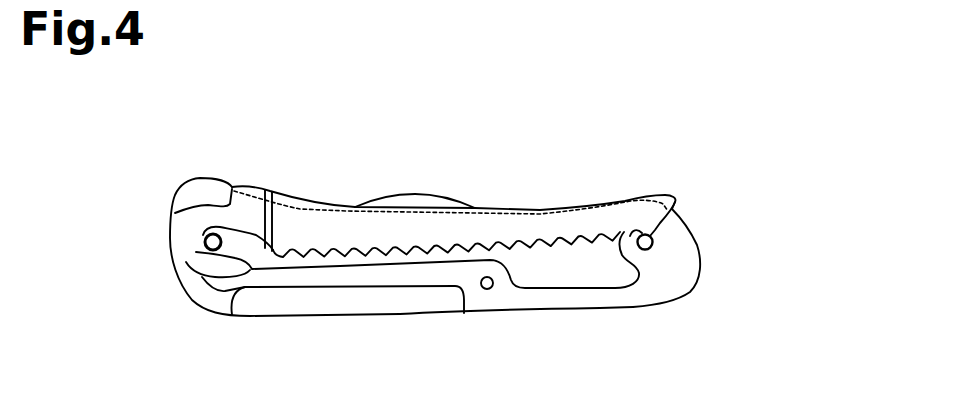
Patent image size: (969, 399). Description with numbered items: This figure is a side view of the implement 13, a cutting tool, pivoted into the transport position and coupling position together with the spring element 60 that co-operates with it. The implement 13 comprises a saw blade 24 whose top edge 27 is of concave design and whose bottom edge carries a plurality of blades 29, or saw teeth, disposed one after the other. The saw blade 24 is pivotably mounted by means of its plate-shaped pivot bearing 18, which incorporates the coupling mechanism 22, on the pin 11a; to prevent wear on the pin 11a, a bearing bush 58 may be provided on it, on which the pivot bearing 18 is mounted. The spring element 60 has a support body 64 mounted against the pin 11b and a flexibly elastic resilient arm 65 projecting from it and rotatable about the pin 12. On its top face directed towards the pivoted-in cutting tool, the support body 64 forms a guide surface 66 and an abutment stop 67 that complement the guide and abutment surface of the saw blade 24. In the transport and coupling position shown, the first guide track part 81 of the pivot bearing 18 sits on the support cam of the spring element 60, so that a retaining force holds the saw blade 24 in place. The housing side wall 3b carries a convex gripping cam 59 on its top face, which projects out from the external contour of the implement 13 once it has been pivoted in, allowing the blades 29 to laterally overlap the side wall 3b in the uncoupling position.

The pivot bearing 18 is at (160, 193).
The spring element 60 is at (670, 300).
The support body 64 is at (673, 277).
The implement 13 is at (666, 188).
The abutment stop 67 is at (655, 224).
The pin 11b is at (653, 242).
The side wall 3b is at (202, 180).
The top edge 27 is at (542, 201).
The gripping cam 59 is at (416, 195).
The saw blade 24 is at (262, 190).
The bearing bush 58 is at (203, 235).
The pin 11a is at (205, 247).
The blades 29 is at (562, 246).
The coupling mechanism 22 is at (254, 279).
The guide surface 66 is at (621, 262).
The resilient arm 65 is at (357, 276).
The pin 12 is at (485, 290).
The first guide track part 81 is at (199, 283).